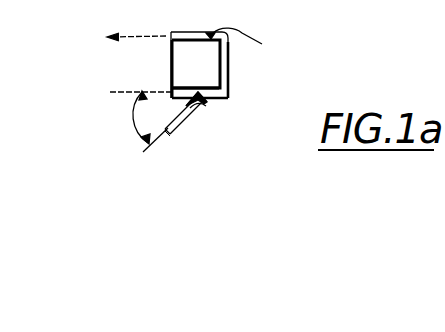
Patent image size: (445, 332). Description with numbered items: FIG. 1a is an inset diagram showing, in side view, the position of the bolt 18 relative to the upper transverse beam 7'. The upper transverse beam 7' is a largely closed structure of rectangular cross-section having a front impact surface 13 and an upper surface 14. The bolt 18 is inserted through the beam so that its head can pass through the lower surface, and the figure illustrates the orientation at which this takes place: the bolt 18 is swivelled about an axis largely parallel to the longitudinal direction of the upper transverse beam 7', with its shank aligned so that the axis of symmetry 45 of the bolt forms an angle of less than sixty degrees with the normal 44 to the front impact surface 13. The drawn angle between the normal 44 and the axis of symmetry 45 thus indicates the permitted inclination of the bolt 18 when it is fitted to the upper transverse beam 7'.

The front impact surface 13 is at (171, 52).
The upper transverse beam 7' is at (161, 78).
The normal 44 is at (119, 37).
The upper surface 14 is at (250, 40).
The axis of symmetry 45 is at (175, 133).
The bolt 18 is at (183, 127).